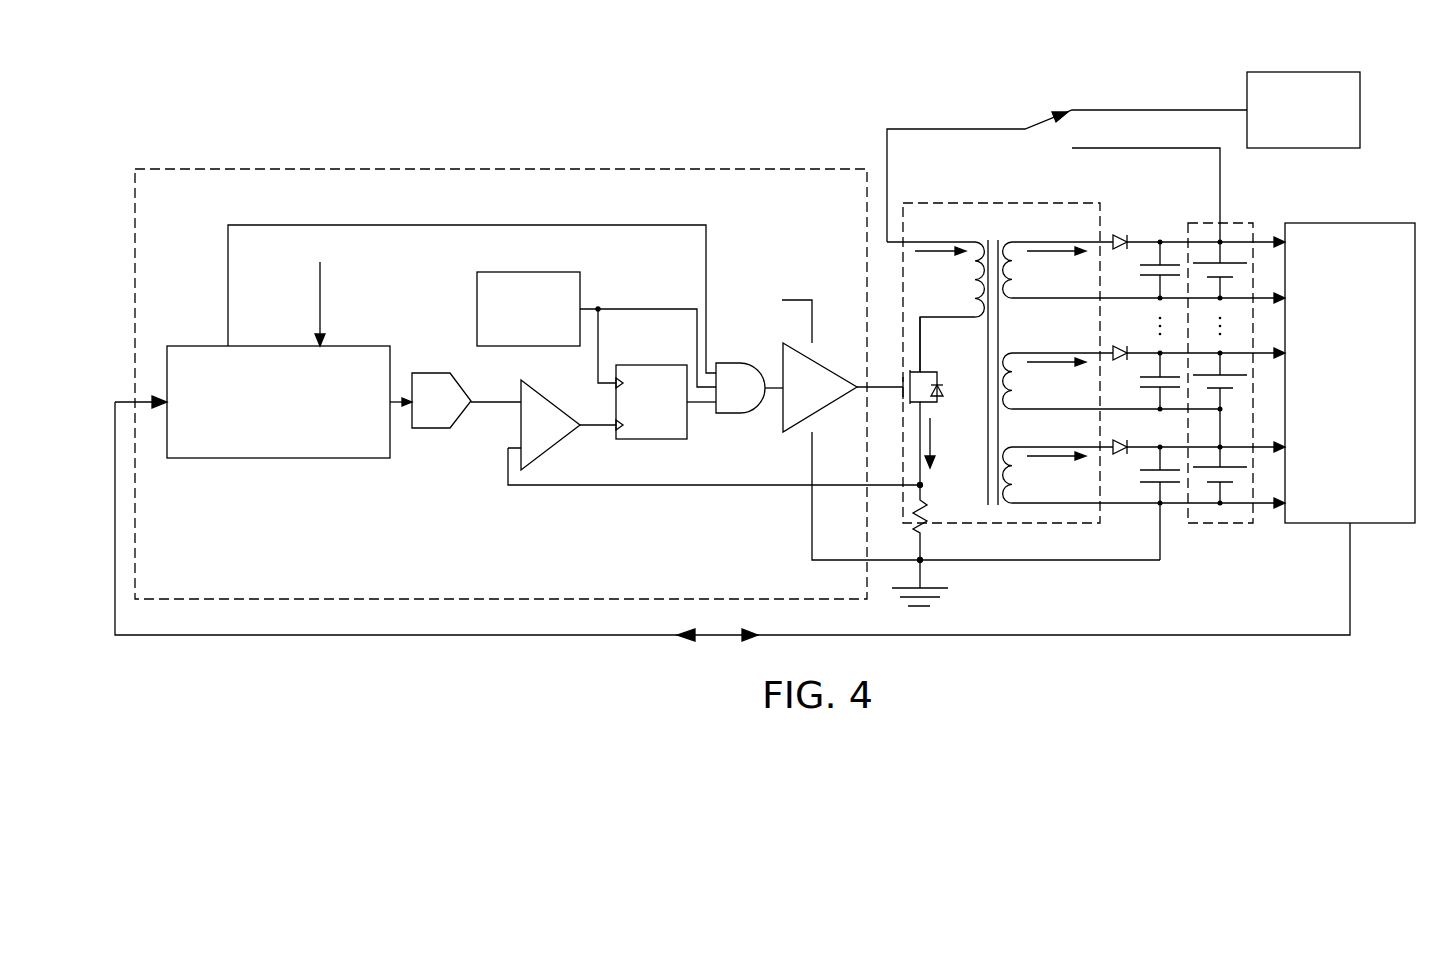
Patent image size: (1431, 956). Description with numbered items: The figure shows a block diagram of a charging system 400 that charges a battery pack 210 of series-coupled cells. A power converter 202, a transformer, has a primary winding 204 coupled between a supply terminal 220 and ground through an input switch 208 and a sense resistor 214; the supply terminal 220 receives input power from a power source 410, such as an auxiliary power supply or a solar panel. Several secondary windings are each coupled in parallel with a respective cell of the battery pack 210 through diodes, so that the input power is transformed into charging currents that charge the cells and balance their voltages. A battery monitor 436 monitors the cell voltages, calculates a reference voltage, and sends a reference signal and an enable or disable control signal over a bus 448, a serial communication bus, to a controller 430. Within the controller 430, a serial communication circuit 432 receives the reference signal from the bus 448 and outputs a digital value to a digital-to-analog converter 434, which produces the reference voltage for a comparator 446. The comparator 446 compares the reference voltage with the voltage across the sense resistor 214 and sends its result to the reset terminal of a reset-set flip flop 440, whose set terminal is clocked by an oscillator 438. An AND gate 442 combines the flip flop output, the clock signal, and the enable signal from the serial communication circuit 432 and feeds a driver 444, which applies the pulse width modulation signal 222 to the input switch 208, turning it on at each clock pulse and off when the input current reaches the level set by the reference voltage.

The charging system 400 is at (222, 126).
The controller 430 is at (745, 170).
The serial communication circuit 432 is at (343, 346).
The digital-to-analog converter (DAC) 434 is at (422, 430).
The oscillator 438 is at (497, 272).
The reset-set (RS) flip flop 440 is at (623, 365).
The AND gate 442 is at (758, 401).
The driver 444 is at (826, 375).
The comparator 446 is at (553, 455).
The bus 448 is at (1133, 635).
The input switch 208 is at (896, 372).
The pulse width modulation (PWM) signal 222 is at (880, 389).
The sense resistor 214 is at (924, 534).
The supply terminal 220 is at (928, 129).
The power source 410 is at (1294, 72).
The power converter 202 is at (993, 203).
The primary winding 204 is at (970, 240).
The battery pack 210 is at (1230, 223).
The battery monitor 436 is at (1340, 223).